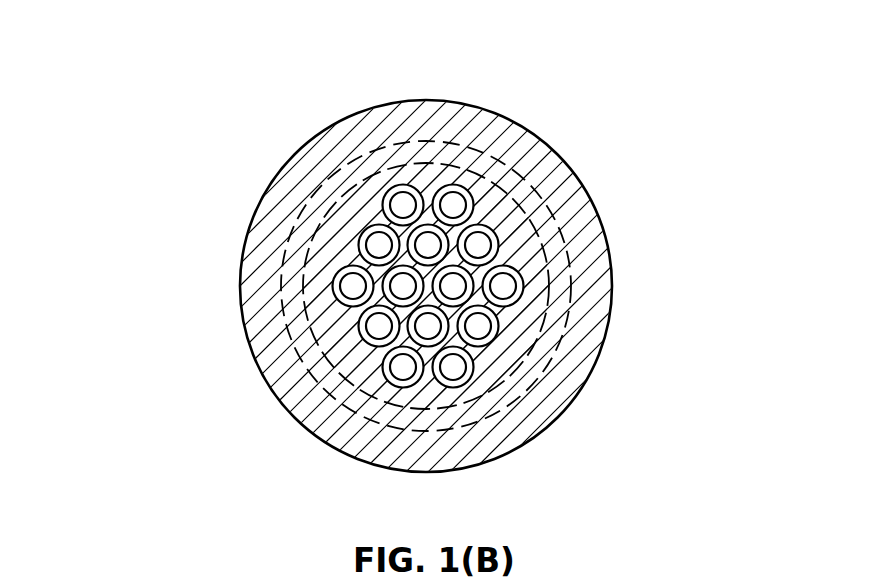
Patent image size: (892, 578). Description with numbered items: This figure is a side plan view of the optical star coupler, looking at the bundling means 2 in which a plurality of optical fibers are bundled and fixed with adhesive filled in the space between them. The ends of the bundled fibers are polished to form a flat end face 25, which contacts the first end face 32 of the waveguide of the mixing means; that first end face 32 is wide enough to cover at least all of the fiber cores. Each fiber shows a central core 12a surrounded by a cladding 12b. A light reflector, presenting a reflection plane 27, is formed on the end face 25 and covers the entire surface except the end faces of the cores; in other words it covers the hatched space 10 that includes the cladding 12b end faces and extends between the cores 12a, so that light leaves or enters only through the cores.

The bundling means 2 is at (600, 358).
The space 10 is at (324, 279).
The core 12a is at (382, 245).
The cladding 12b is at (360, 253).
The end face 25 is at (360, 207).
The reflection plane 27 is at (423, 175).
The first end face 32 is at (507, 167).